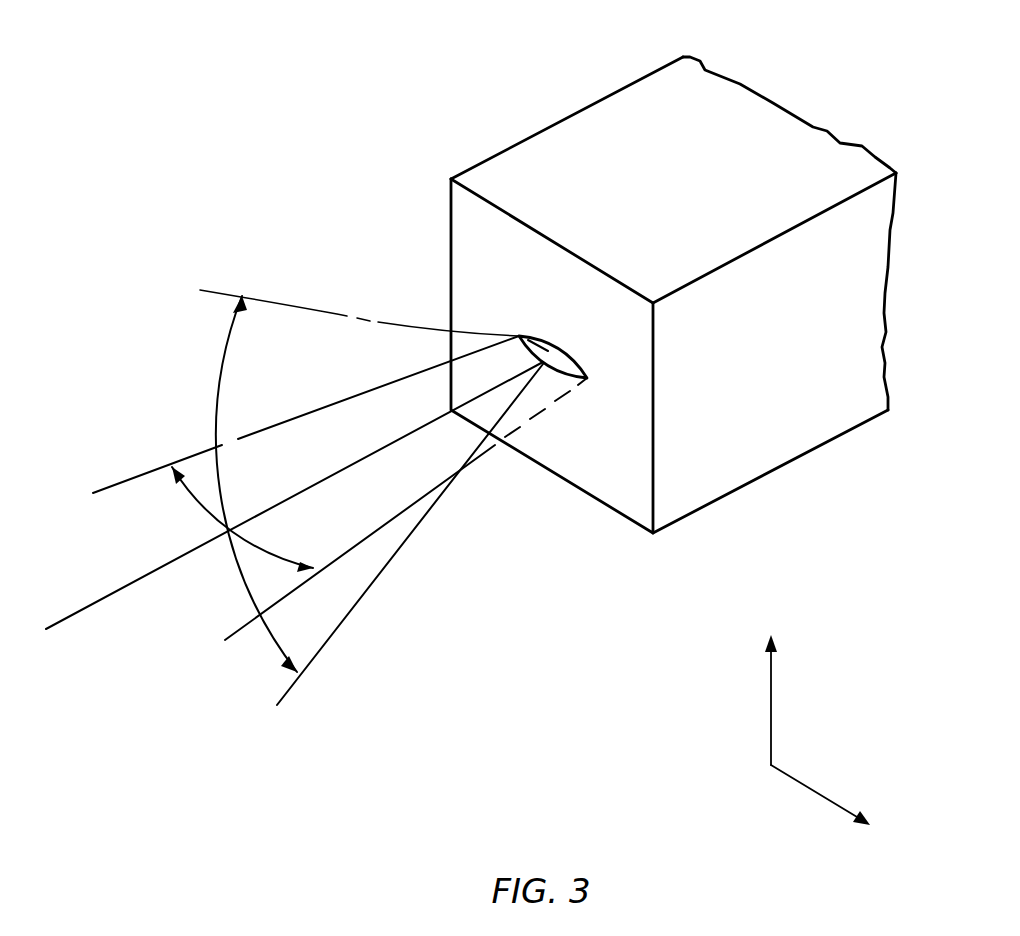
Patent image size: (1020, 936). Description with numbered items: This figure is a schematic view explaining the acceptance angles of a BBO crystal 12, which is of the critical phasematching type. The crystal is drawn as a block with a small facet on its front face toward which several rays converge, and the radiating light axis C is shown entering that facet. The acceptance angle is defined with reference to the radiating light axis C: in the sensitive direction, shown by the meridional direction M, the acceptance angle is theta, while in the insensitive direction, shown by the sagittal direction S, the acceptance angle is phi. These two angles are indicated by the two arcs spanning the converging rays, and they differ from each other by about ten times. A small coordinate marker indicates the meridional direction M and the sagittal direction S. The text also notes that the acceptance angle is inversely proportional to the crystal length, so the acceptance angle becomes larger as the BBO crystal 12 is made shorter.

The BBO crystal 12 is at (558, 117).
The radiating light axis C is at (70, 618).
The meridional direction M is at (774, 674).
The sagittal direction S is at (833, 808).